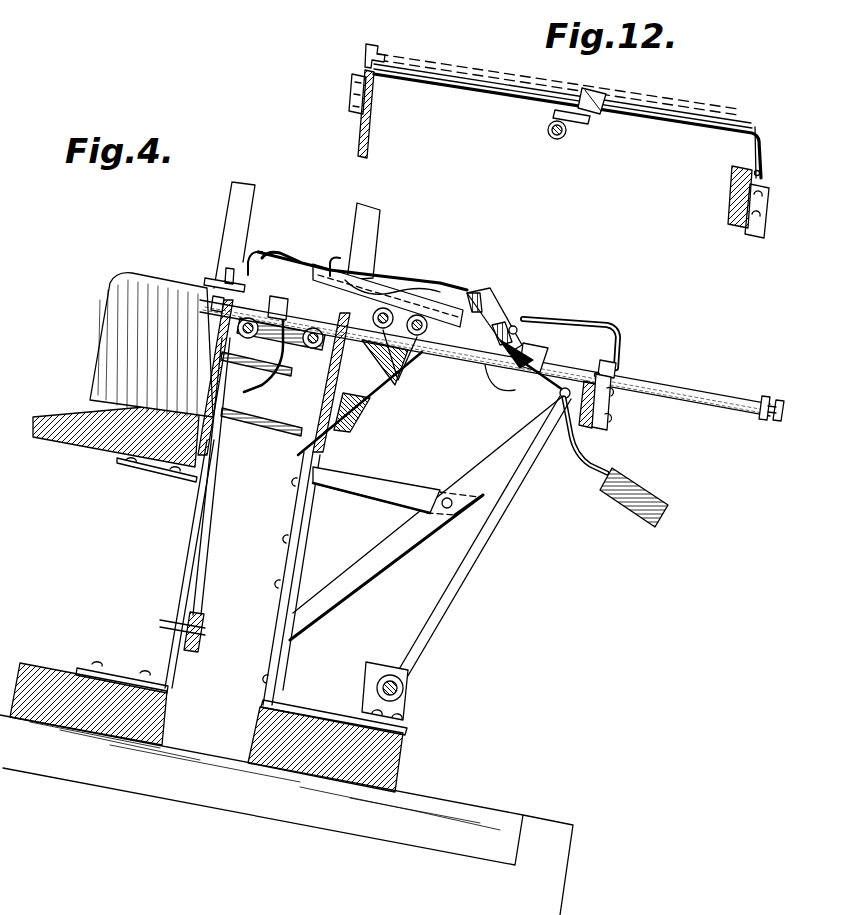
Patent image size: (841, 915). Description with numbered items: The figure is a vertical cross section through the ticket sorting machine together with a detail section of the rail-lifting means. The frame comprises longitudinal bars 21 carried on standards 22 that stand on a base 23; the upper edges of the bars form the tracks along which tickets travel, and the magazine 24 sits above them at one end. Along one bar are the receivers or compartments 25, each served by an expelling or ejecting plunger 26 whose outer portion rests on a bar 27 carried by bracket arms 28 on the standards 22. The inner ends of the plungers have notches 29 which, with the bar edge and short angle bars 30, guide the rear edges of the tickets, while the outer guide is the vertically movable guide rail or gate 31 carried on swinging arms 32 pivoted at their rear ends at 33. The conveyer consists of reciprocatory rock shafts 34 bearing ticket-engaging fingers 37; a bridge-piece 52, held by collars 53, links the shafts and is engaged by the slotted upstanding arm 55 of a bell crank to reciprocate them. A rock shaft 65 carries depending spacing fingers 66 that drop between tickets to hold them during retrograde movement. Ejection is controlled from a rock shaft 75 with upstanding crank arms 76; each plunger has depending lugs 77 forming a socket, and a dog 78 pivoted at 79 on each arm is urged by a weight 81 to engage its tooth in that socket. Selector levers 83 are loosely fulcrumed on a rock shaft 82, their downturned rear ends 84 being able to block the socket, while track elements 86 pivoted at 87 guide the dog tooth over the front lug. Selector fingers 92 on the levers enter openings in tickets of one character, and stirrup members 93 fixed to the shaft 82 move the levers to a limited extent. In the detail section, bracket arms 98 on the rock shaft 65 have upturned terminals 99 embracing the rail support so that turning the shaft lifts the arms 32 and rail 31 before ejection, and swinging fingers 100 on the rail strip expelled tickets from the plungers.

In FIG. 12, the longitudinal bars 21 is at (369, 145).
In FIG. 4, the longitudinal bars 21 is at (215, 385).
In FIG. 4, the standards 22 is at (297, 540).
In FIG. 4, the base 23 is at (40, 680).
In FIG. 4, the magazine 24 is at (256, 200).
In FIG. 4, the receivers or compartments 25 is at (118, 300).
In FIG. 4, the expelling or ejecting plunger 26 is at (700, 395).
In FIG. 12, the bar 27 is at (737, 194).
In FIG. 4, the bar 27 is at (600, 428).
In FIG. 4, the bracket arms 28 is at (487, 465).
In FIG. 4, the notches 29 is at (360, 345).
In FIG. 4, the angle bars 30 is at (368, 282).
In FIG. 12, the movable guide rail or gate 31 is at (378, 98).
In FIG. 4, the movable guide rail or gate 31 is at (215, 280).
In FIG. 12, the swinging arms 32 is at (460, 80).
In FIG. 4, the swinging arms 32 is at (616, 333).
In FIG. 12, the pivot 33 is at (760, 174).
In FIG. 4, the pivot 33 is at (616, 368).
In FIG. 4, the reciprocatory rock shafts 34 is at (238, 330).
In FIG. 4, the ticket-engaging fingers 37 is at (260, 300).
In FIG. 4, the bridge-piece 52 is at (258, 376).
In FIG. 4, the collars 53 is at (222, 360).
In FIG. 4, the upstanding arm 55 is at (213, 526).
In FIG. 12, the rock shaft 65 is at (552, 138).
In FIG. 4, the rock shaft 65 is at (415, 337).
In FIG. 4, the spacing fingers 66 is at (250, 258).
In FIG. 4, the rock shaft 75 is at (404, 692).
In FIG. 4, the upstanding crank arms 76 is at (510, 497).
In FIG. 4, the depending lugs 77 is at (500, 372).
In FIG. 4, the dog 78 is at (540, 380).
In FIG. 4, the pivot 79 is at (567, 386).
In FIG. 4, the weight 81 is at (637, 495).
In FIG. 4, the rock shaft 82 is at (404, 378).
In FIG. 4, the controlling or selector levers 83 is at (486, 298).
In FIG. 4, the downturned rear ends 84 is at (553, 348).
In FIG. 4, the track elements 86 is at (492, 333).
In FIG. 4, the pivot 87 is at (516, 328).
In FIG. 4, the selector fingers 92 is at (286, 280).
In FIG. 4, the stirrup member 93 is at (445, 296).
In FIG. 12, the bracket arms 98 is at (578, 126).
In FIG. 12, the upturned terminals 99 is at (606, 108).
In FIG. 12, the swinging fingers 100 is at (352, 102).
In FIG. 4, the swinging fingers 100 is at (213, 306).